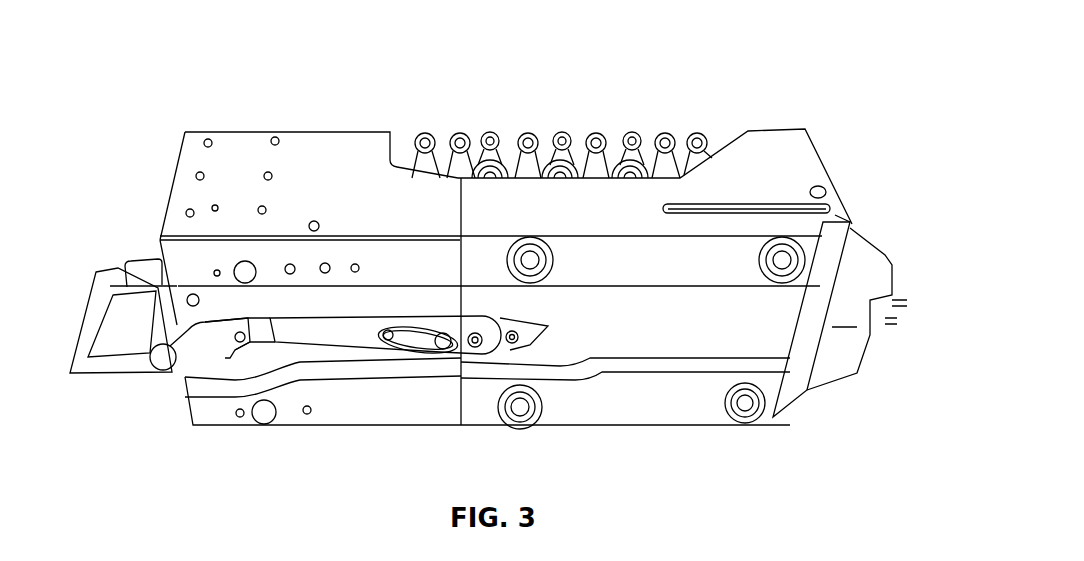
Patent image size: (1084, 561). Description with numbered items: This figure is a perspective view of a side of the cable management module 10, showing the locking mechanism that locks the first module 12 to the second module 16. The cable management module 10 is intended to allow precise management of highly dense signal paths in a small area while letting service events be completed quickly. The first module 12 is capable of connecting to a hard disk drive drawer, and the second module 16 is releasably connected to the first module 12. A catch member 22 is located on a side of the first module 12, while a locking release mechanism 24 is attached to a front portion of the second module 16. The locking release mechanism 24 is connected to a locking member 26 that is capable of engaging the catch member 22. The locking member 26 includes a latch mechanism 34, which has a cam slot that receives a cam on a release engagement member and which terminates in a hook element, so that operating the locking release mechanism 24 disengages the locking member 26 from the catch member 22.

The cable management module 10 is at (722, 110).
The first module 12 is at (793, 397).
The second module 16 is at (325, 401).
The catch member 22 is at (515, 341).
The locking release mechanism 24 is at (95, 377).
The locking member 26 is at (360, 337).
The latch mechanism 34 is at (536, 330).